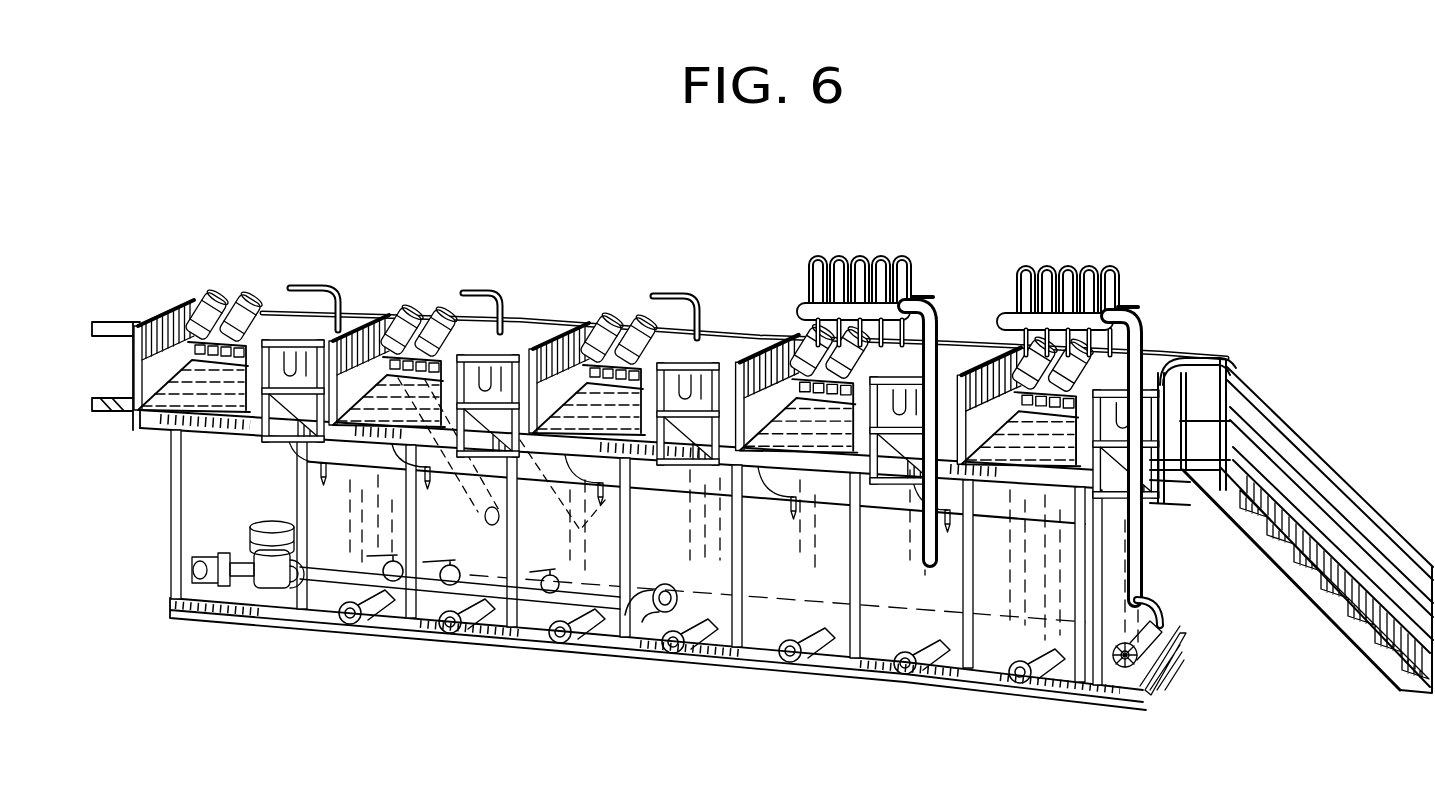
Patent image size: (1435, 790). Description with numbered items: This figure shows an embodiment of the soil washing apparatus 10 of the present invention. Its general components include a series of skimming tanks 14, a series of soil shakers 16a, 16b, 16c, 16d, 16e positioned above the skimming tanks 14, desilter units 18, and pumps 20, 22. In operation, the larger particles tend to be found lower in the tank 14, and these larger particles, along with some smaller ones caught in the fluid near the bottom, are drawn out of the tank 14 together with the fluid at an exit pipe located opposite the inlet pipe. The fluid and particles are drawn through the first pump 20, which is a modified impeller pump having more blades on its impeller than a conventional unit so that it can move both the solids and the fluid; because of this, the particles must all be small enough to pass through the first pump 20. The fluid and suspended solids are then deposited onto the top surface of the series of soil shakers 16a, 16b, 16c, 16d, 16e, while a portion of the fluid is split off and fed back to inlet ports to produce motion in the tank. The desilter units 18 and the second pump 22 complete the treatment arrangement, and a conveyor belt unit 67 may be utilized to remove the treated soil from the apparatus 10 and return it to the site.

The soil washing apparatus 10 is at (1013, 236).
The skimming tank 14 is at (787, 610).
The soil shaker 16a is at (218, 303).
The soil shaker 16b is at (437, 317).
The soil shaker 16c is at (624, 318).
The soil shaker 16d is at (790, 323).
The soil shaker 16e is at (1003, 343).
The desilter unit 18 is at (907, 290).
The first pump 20 is at (250, 540).
The pump 22 is at (1163, 620).
The conveyor belt unit 67 is at (480, 520).